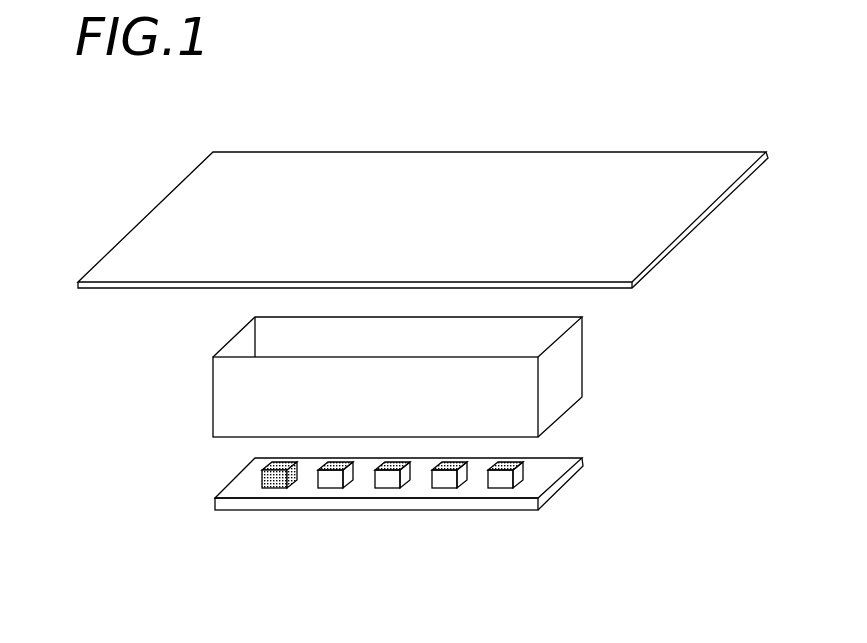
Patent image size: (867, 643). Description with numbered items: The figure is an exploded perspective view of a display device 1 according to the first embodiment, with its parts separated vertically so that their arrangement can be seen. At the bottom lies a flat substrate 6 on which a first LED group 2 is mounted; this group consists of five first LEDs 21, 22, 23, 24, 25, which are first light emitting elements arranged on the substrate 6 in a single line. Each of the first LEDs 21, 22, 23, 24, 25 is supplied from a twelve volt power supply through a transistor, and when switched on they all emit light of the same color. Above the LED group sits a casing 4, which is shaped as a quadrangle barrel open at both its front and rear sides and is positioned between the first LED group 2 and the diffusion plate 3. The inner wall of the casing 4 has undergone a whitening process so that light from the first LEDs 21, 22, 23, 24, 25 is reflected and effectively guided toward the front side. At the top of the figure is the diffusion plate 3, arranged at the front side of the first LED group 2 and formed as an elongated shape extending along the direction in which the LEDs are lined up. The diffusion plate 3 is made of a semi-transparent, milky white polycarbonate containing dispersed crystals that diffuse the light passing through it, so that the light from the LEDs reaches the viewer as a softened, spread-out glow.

The display device 1 is at (733, 81).
The first LED group 2 is at (518, 444).
The diffusion plate 3 is at (655, 238).
The casing 4 is at (226, 402).
The substrate 6 is at (228, 505).
The first LED 21 is at (273, 488).
The first LED 22 is at (330, 488).
The first LED 23 is at (387, 488).
The first LED 24 is at (443, 488).
The first LED 25 is at (500, 488).